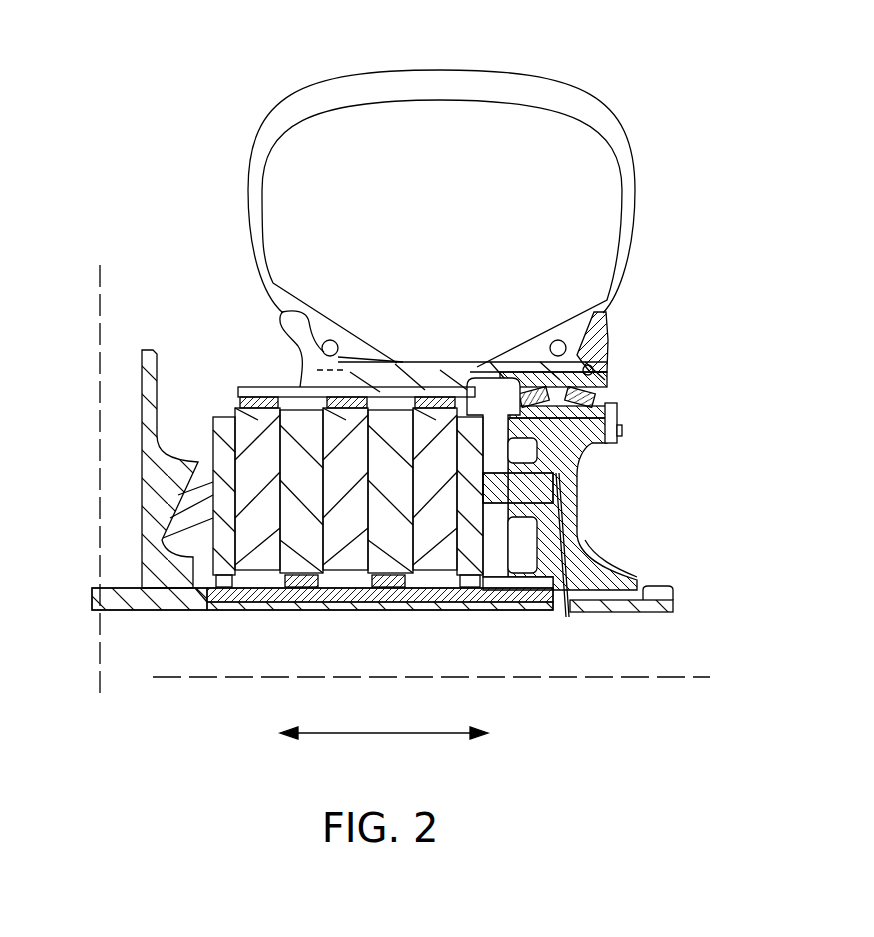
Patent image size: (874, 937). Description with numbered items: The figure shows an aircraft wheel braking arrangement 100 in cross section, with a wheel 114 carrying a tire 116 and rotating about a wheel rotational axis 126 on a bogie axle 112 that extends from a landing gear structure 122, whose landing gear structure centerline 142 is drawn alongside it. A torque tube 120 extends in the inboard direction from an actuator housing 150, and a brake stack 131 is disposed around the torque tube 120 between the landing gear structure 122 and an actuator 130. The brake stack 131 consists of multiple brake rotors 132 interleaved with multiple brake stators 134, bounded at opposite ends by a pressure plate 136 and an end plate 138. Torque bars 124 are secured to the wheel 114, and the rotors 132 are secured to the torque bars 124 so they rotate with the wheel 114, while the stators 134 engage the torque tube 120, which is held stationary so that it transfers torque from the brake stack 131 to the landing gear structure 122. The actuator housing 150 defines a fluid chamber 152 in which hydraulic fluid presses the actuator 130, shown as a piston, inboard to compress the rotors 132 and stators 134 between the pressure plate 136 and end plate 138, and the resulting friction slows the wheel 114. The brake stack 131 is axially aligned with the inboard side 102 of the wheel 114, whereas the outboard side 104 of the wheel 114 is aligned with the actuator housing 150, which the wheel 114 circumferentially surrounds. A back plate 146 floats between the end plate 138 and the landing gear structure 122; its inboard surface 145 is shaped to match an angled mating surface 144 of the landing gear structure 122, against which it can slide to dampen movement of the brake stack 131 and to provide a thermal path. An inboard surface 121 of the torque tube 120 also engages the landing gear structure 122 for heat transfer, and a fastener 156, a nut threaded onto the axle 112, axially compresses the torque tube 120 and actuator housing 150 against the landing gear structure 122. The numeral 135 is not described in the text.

The aircraft wheel braking arrangement 100 is at (674, 76).
The inboard side of wheel 102 is at (262, 297).
The outboard side of wheel 104 is at (625, 319).
The bogie axle 112 is at (316, 603).
The wheel 114 is at (443, 372).
The tire 116 is at (420, 95).
The torque tube 120 is at (252, 598).
The inboard surface of torque tube 121 is at (205, 600).
The landing gear structure 122 is at (143, 562).
The torque bar 124 is at (250, 388).
The wheel rotational axis 126 is at (385, 678).
The actuator 130 is at (548, 497).
The brake stack 131 is at (322, 458).
The brake rotor 132 is at (272, 481).
The brake stator 134 is at (317, 486).
The sensor lead 135 is at (398, 580).
The pressure plate 136 is at (476, 425).
The end plate 138 is at (215, 447).
The landing gear structure centerline 142 is at (100, 288).
The mating surface 144 is at (187, 483).
The inboard surface of back plate 145 is at (167, 530).
The back plate 146 is at (190, 513).
The actuator housing 150 is at (573, 490).
The fluid chamber 152 is at (567, 540).
The fastener 156 is at (673, 598).